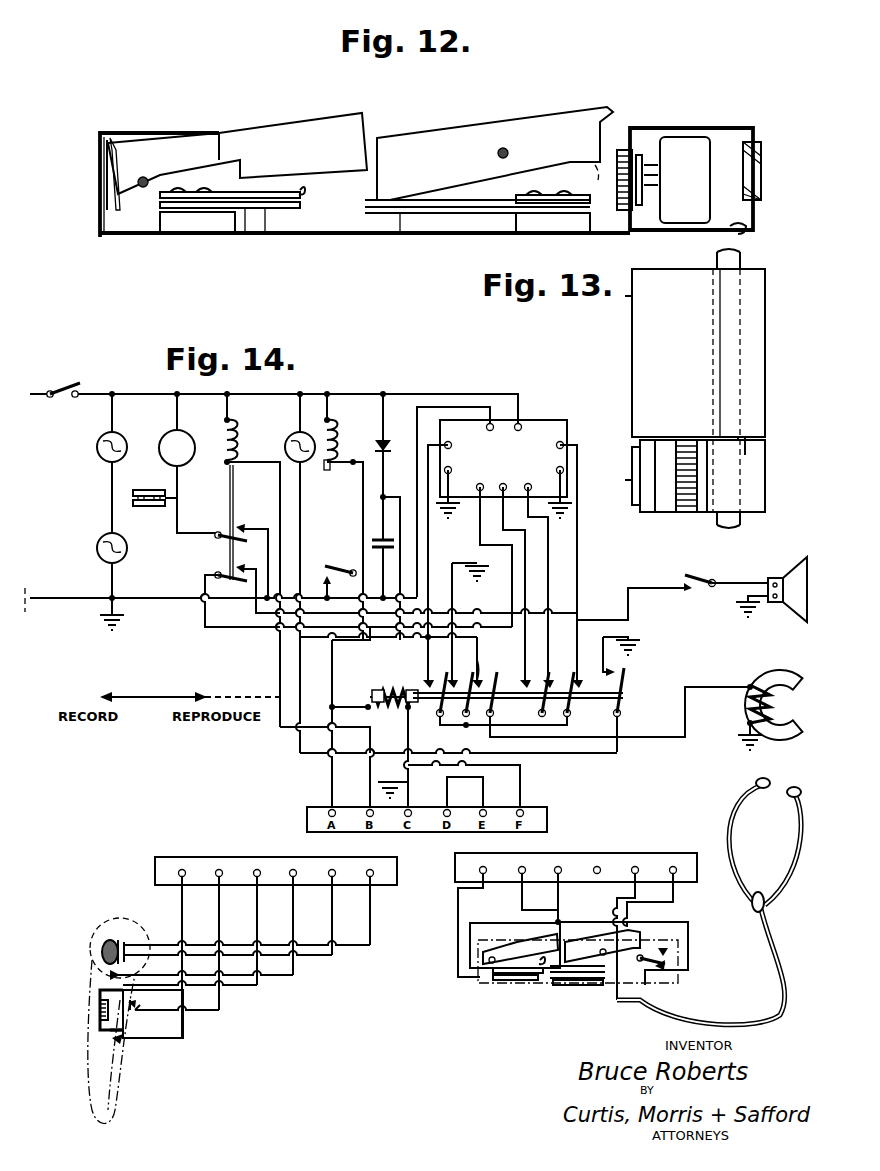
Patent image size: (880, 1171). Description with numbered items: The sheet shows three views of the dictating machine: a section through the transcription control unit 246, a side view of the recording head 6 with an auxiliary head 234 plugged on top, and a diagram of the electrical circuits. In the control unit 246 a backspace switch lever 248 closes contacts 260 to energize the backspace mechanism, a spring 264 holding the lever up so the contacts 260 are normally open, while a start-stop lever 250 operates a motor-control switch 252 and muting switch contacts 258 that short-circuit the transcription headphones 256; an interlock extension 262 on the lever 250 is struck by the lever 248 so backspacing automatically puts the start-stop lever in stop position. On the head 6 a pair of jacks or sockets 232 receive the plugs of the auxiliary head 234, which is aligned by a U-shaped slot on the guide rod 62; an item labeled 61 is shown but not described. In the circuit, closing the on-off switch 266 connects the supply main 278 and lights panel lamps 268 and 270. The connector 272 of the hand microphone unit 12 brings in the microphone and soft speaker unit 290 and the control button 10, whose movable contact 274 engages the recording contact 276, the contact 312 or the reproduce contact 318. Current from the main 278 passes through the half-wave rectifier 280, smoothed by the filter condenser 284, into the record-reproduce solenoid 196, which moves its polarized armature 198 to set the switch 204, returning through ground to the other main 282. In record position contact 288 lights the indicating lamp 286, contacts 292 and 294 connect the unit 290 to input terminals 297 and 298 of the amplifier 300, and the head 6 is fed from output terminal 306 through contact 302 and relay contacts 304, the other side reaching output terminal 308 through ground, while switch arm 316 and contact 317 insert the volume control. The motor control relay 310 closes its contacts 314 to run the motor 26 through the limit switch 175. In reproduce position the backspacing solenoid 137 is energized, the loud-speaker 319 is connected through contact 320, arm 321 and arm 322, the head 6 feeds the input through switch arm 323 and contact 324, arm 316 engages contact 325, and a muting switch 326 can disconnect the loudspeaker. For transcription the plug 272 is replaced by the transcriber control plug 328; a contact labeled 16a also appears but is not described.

In FIG. 12, the control unit 246 is at (143, 122).
In FIG. 14, the control unit 246 is at (760, 996).
In FIG. 12, the backspace switch lever 248 is at (283, 135).
In FIG. 14, the backspace switch lever 248 is at (525, 935).
In FIG. 12, the start-stop switch lever 250 is at (542, 130).
In FIG. 14, the start-stop switch lever 250 is at (590, 942).
In FIG. 12, the motor-control switch 252 is at (688, 148).
In FIG. 14, the motor-control switch 252 is at (668, 960).
In FIG. 12, the muting switch contacts 258 is at (396, 214).
In FIG. 14, the muting switch contacts 258 is at (590, 980).
In FIG. 12, the backspace switch contacts 260 is at (272, 210).
In FIG. 14, the backspace switch contacts 260 is at (520, 978).
In FIG. 12, the interlock extension 262 is at (350, 208).
In FIG. 14, the interlock extension 262 is at (640, 957).
In FIG. 12, the spring 264 is at (100, 202).
In FIG. 13, the guide rod 62 is at (742, 265).
In FIG. 13, the auxiliary head 234 is at (632, 333).
In FIG. 13, the jacks or sockets 232 is at (745, 452).
In FIG. 13, the recording head 6 is at (632, 462).
In FIG. 14, the recording head 6 is at (790, 684).
In FIG. 13, the clutch assembly 61 is at (768, 471).
In FIG. 14, the alternating current supply main 278 is at (42, 391).
In FIG. 14, the main power on-off switch 266 is at (65, 400).
In FIG. 14, the panel lamp 268 is at (97, 447).
In FIG. 14, the panel lamp 270 is at (97, 548).
In FIG. 14, the motor 26 is at (173, 431).
In FIG. 14, the limit switch 175 is at (152, 490).
In FIG. 14, the motor control relay 310 is at (224, 460).
In FIG. 14, the relay contacts 314 is at (218, 532).
In FIG. 14, the relay contacts 304 is at (218, 573).
In FIG. 14, the indicating lamp 286 is at (293, 432).
In FIG. 14, the backspacing solenoid 137 is at (327, 466).
In FIG. 14, the half-wave rectifier 280 is at (380, 432).
In FIG. 14, the filter condenser 284 is at (372, 540).
In FIG. 14, the switch 16a is at (348, 568).
In FIG. 14, the amplifier 300 is at (547, 428).
In FIG. 14, the amplifier input terminal 297 is at (455, 562).
In FIG. 14, the amplifier input terminal 298 is at (461, 489).
In FIG. 14, the amplifier output terminal 306 is at (601, 562).
In FIG. 14, the amplifier output terminal 308 is at (545, 489).
In FIG. 14, the muting switch 326 is at (703, 578).
In FIG. 14, the loud-speaker 319 is at (796, 572).
In FIG. 14, the record-reproduce switch 204 is at (700, 682).
In FIG. 14, the record-reproduce solenoid 196 is at (372, 696).
In FIG. 14, the polarized armature 198 is at (408, 690).
In FIG. 14, the switch contact 292 is at (445, 682).
In FIG. 14, the switch contact 294 is at (470, 683).
In FIG. 14, the switch contact 302 is at (495, 681).
In FIG. 14, the contact 324 is at (498, 670).
In FIG. 14, the contact 317 is at (532, 678).
In FIG. 14, the contact 325 is at (568, 681).
In FIG. 14, the switch contact 320 is at (584, 676).
In FIG. 14, the switch contact 288 is at (597, 666).
In FIG. 14, the switch arm 316 is at (533, 694).
In FIG. 14, the arm 321 is at (590, 718).
In FIG. 14, the arm 322 is at (455, 708).
In FIG. 14, the switch arm 323 is at (488, 722).
In FIG. 14, the supply main 282 is at (37, 600).
In FIG. 14, the connector 272 is at (160, 857).
In FIG. 14, the hand microphone unit 12 is at (100, 918).
In FIG. 14, the microphone and soft speaker unit 290 is at (100, 950).
In FIG. 14, the fixed recording-switch contact 276 is at (108, 977).
In FIG. 14, the control button 10 is at (100, 1002).
In FIG. 14, the movable contact 274 is at (112, 1030).
In FIG. 14, the contact 312 is at (135, 1012).
In FIG. 14, the reproduce contact 318 is at (112, 1040).
In FIG. 14, the transcriber control plug 328 is at (615, 853).
In FIG. 14, the transcription headphones 256 is at (730, 815).